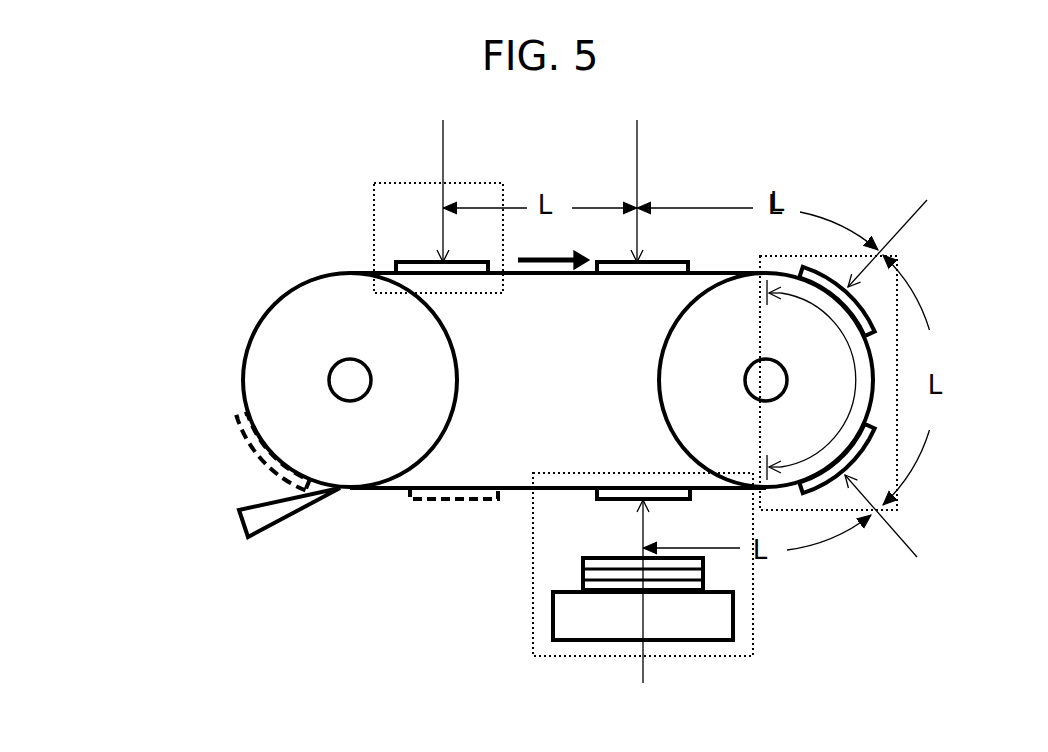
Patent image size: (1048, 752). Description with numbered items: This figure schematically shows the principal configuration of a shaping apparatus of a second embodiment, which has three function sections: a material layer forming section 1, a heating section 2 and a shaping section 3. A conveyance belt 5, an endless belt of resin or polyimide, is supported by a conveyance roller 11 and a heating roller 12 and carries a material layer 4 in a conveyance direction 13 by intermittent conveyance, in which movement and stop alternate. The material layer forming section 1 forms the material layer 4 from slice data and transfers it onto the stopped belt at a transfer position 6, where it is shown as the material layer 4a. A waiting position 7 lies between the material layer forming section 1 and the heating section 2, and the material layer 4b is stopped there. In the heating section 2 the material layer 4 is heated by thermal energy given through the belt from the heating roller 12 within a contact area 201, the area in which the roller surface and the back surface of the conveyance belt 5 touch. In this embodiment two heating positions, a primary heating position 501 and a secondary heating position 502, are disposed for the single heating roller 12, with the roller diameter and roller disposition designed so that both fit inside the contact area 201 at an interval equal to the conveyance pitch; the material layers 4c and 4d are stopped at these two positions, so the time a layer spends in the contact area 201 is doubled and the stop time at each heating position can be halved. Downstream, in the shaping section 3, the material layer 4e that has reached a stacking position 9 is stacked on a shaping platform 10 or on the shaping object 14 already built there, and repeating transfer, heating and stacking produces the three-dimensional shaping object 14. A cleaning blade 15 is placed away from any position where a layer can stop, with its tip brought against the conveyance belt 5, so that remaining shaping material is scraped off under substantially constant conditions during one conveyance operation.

The material layer forming section 1 is at (367, 238).
The heating section 2 is at (897, 358).
The shaping section 3 is at (533, 567).
The material layer 4 is at (250, 450).
The material layer transferred to the transfer position 4a is at (422, 268).
The material layer stopped at the waiting position 4b is at (665, 265).
The material layer stopped at the heating position 4c is at (822, 275).
The material layer stopped at the stacking position 4d is at (862, 443).
The material layer 4e is at (645, 495).
The conveyance belt 5 is at (472, 485).
The transfer position 6 is at (443, 172).
The waiting position 7 is at (637, 172).
The stacking position 9 is at (643, 610).
The shaping platform 10 is at (725, 613).
The conveyance roller 11 is at (313, 343).
The heating roller 12 is at (668, 368).
The conveyance direction 13 is at (549, 245).
The shaping object 14 is at (707, 575).
The cleaning blade 15 is at (265, 515).
The contact area 201 is at (835, 315).
The primary heating position 501 is at (912, 231).
The secondary heating position 502 is at (901, 531).